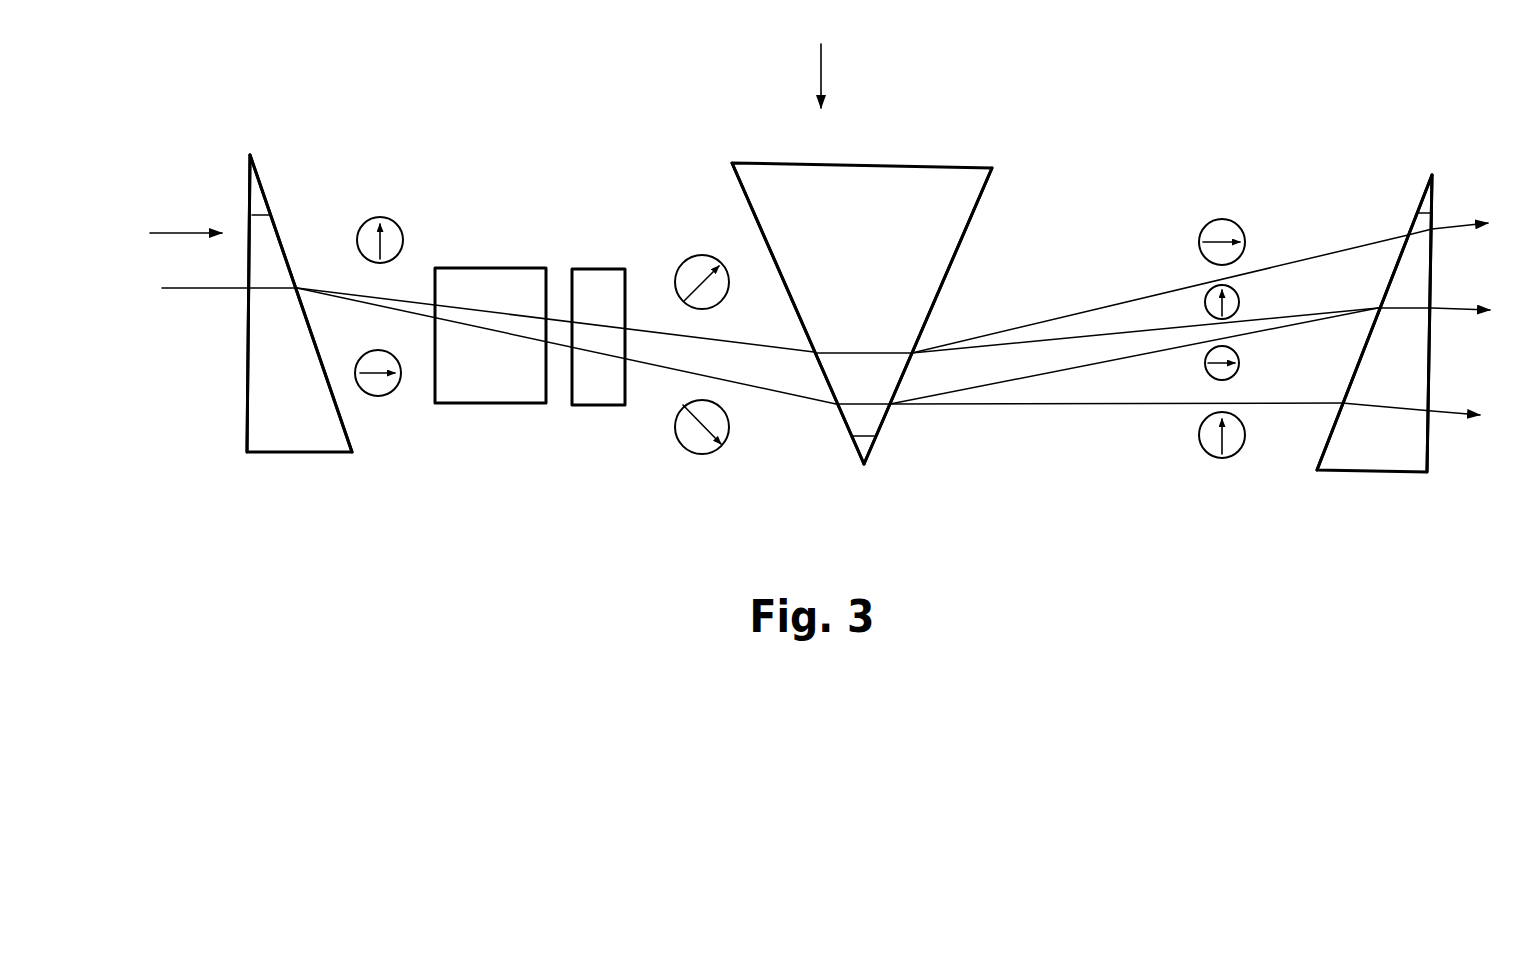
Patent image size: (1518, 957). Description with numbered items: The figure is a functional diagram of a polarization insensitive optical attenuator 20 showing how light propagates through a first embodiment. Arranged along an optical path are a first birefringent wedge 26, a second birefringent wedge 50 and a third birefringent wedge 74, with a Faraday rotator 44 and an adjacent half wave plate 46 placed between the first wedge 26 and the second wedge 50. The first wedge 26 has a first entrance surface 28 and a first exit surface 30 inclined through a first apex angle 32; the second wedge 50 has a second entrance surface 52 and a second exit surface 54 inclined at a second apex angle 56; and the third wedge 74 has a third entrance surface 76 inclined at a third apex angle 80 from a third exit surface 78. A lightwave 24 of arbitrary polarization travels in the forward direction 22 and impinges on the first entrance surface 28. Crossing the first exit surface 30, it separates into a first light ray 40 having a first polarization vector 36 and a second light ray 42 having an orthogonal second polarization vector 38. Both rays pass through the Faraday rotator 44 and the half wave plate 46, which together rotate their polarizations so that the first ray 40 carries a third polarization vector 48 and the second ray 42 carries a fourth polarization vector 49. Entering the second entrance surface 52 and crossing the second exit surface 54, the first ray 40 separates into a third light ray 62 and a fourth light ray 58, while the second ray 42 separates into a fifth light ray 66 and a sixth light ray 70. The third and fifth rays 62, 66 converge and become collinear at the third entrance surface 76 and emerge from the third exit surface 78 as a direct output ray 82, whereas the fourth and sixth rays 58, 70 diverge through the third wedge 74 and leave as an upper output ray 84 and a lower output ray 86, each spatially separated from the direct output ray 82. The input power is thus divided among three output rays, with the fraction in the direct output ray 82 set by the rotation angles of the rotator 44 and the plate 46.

The polarization insensitive optical attenuator 20 is at (820, 59).
The forward direction 22 is at (172, 233).
The lightwave 24 is at (205, 287).
The first birefringent wedge 26 is at (251, 156).
The first entrance surface 28 is at (247, 377).
The first exit surface 30 is at (265, 188).
The first apex angle 32 is at (264, 215).
The first polarization vector 36 is at (400, 216).
The second polarization vector 38 is at (383, 397).
The first light ray 40 is at (408, 302).
The second light ray 42 is at (410, 316).
The Faraday rotator 44 is at (502, 267).
The half wave plate 46 is at (600, 268).
The third polarization vector 48 is at (677, 270).
The fourth polarization vector 49 is at (703, 452).
The second birefringent wedge 50 is at (858, 467).
The second entrance surface 52 is at (749, 203).
The second exit surface 54 is at (973, 213).
The second apex angle 56 is at (880, 428).
The fourth light ray 58 is at (1009, 327).
The third light ray 62 is at (1009, 341).
The fifth light ray 66 is at (1106, 362).
The sixth light ray 70 is at (1037, 404).
The third birefringent wedge 74 is at (1433, 176).
The third entrance surface 76 is at (1392, 277).
The third exit surface 78 is at (1431, 258).
The third apex angle 80 is at (1418, 214).
The direct output ray 82 is at (1450, 308).
The upper output ray 84 is at (1455, 225).
The lower output ray 86 is at (1447, 412).